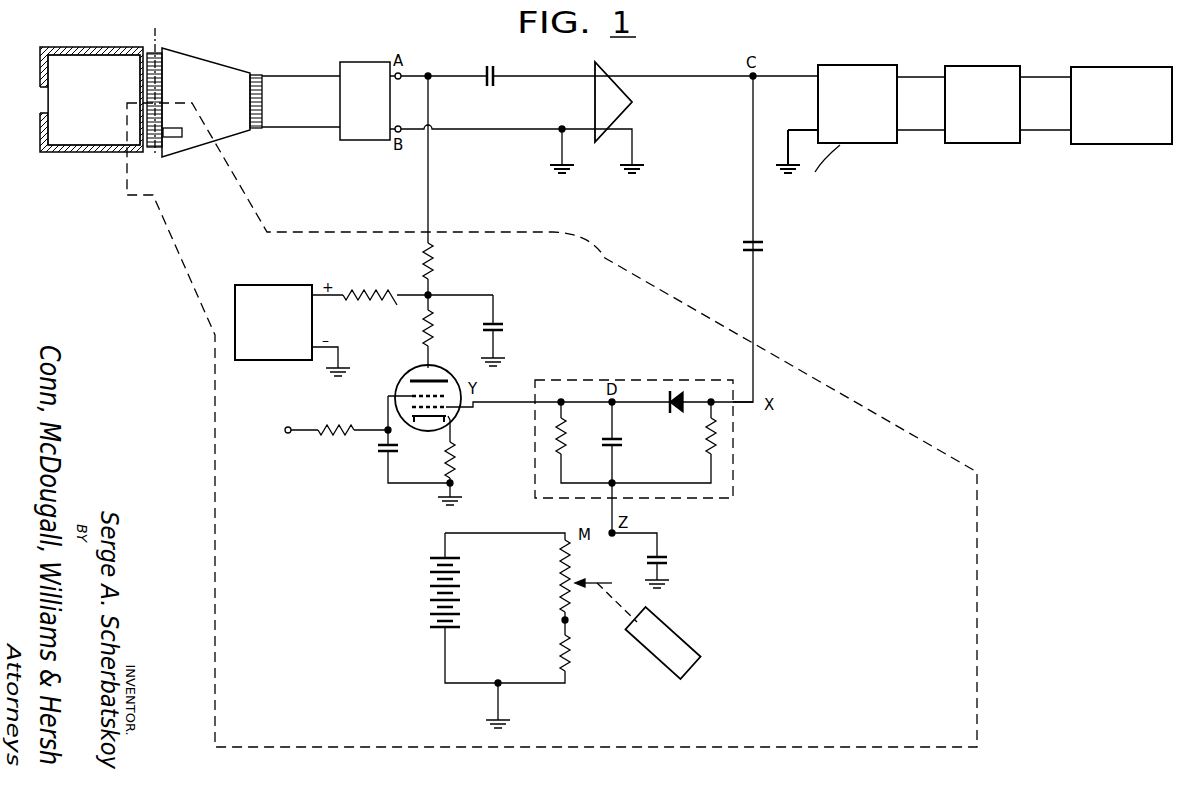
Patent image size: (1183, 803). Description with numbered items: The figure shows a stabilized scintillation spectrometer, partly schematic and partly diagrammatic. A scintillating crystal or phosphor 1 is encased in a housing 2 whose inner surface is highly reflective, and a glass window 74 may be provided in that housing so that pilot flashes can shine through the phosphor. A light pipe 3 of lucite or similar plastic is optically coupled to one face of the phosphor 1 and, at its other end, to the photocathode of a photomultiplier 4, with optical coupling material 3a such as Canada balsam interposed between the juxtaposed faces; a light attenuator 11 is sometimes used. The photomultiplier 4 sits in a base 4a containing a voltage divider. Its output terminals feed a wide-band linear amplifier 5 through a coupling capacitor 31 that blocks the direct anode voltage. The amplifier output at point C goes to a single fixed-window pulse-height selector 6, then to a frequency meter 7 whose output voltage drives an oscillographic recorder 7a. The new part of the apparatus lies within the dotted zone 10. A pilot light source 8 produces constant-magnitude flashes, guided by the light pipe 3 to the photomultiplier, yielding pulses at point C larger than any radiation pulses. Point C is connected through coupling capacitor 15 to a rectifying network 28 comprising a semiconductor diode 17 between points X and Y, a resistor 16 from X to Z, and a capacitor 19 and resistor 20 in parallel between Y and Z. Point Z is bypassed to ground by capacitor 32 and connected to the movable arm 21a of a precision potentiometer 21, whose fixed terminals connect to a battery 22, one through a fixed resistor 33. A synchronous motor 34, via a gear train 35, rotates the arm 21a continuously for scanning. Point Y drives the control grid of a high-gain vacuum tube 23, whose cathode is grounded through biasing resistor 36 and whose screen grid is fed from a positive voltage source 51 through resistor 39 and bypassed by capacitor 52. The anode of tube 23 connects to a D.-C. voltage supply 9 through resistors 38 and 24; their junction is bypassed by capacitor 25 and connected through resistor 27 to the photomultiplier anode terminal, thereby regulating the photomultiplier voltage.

The scintillating crystal or phosphor 1 is at (76, 133).
The housing 2 is at (96, 153).
The light pipe 3 is at (212, 80).
The optical coupling material 3a is at (157, 68).
The photomultiplier 4 is at (297, 120).
The base 4a is at (362, 135).
The wide-band linear amplifier 5 is at (617, 102).
The pulse-height selector 6 is at (860, 72).
The frequency meter 7 is at (995, 70).
The oscillographic recorder 7a is at (1100, 74).
The pilot light source 8 is at (172, 140).
The D.-C. voltage supply 9 is at (265, 353).
The dotted zone 10 is at (885, 418).
The light attenuator 11 is at (160, 40).
The coupling capacitor 15 is at (760, 252).
The resistor 16 is at (705, 440).
The semiconductor diode 17 is at (673, 390).
The capacitor 19 is at (618, 448).
The resistor 20 is at (568, 428).
The precision potentiometer 21 is at (562, 590).
The movable arm 21a is at (605, 566).
The battery 22 is at (468, 590).
The high-gain vacuum tube 23 is at (440, 376).
The resistor 24 is at (368, 290).
The capacitor 25 is at (500, 320).
The resistor 27 is at (435, 257).
The rectifying network 28 is at (735, 446).
The coupling capacitor 31 is at (496, 68).
The capacitor 32 is at (668, 555).
The fixed resistor 33 is at (570, 662).
The synchronous motor 34 is at (688, 635).
The gear train 35 is at (612, 600).
The biasing resistor 36 is at (455, 462).
The resistor 38 is at (423, 330).
The resistor 39 is at (336, 425).
The positive voltage source 51 is at (290, 426).
The capacitor 52 is at (378, 450).
The glass window 74 is at (42, 100).